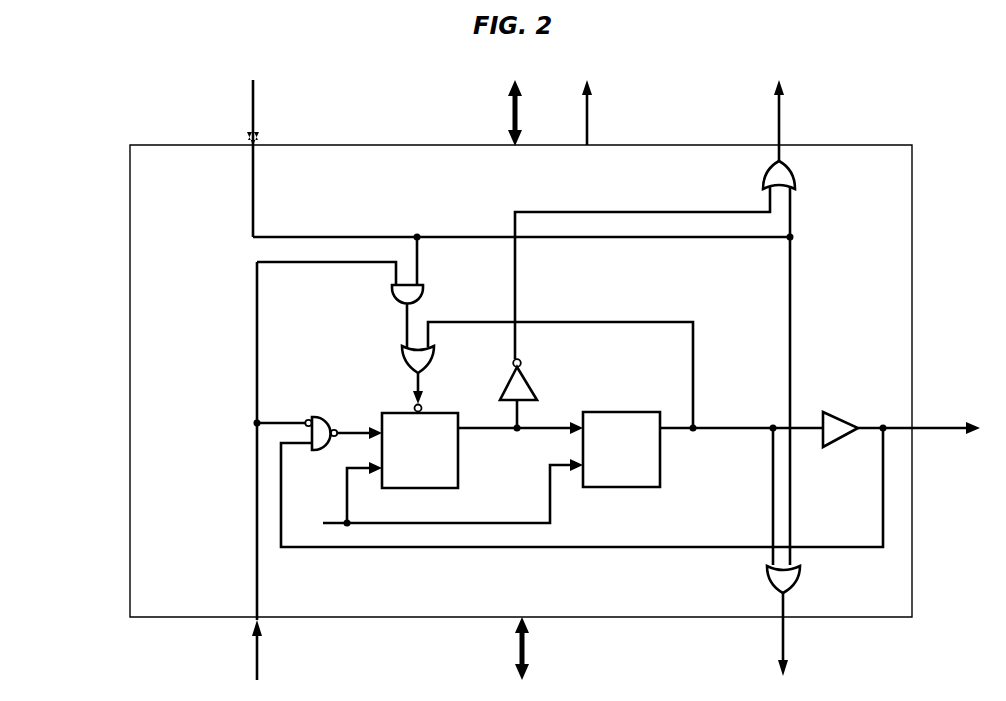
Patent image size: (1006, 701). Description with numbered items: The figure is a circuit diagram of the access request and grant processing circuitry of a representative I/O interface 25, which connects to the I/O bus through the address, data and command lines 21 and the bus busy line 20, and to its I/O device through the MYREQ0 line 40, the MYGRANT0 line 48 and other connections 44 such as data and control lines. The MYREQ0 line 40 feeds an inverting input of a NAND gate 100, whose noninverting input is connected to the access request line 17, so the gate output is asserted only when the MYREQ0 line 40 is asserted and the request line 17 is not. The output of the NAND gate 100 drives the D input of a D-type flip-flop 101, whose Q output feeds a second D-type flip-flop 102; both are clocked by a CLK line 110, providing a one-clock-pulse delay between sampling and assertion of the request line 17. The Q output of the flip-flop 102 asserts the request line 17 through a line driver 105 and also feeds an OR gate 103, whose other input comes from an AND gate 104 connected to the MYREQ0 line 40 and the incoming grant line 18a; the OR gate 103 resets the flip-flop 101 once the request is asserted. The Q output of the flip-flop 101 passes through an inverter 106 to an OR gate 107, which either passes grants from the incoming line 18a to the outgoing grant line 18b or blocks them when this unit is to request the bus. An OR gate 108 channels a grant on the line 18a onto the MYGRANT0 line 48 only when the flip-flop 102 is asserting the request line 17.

The I/O interface 25 is at (130, 151).
The incoming portion of access grant line 18a is at (269, 100).
The outgoing portion of access grant line 18b is at (800, 126).
The address, data, command and other signal lines 21 is at (515, 112).
The bus busy signal line 20 is at (587, 116).
The OR gate 107 is at (795, 175).
The AND gate 104 is at (393, 294).
The OR gate 103 is at (406, 359).
The inverter 106 is at (530, 379).
The NAND gate 100 is at (321, 403).
The D-type flip-flop 101 is at (459, 478).
The second D-type flip-flop 102 is at (661, 475).
The line driver 105 is at (831, 412).
The access request line 17 is at (944, 432).
The OR gate 108 is at (800, 578).
The MYGRANT0 signal line 48 is at (804, 632).
The MYREQ0 signal line 40 is at (279, 666).
The other suitable connections 44 is at (522, 648).
The CLK line 110 is at (327, 515).